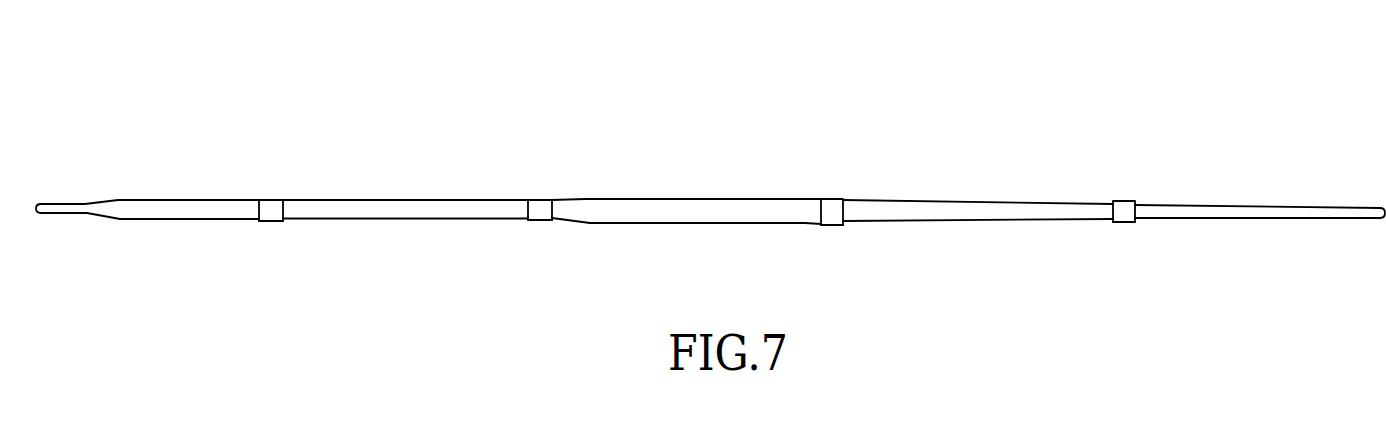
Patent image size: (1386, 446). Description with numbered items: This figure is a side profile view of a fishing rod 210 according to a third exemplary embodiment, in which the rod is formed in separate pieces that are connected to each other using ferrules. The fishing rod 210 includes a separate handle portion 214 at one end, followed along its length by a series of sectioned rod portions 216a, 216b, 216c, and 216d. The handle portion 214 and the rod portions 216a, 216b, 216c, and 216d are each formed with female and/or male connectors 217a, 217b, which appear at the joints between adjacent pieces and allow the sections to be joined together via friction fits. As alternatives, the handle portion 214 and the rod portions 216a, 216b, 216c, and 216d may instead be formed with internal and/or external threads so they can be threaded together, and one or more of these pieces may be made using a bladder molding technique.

The fishing rod 210 is at (886, 116).
The handle portion 214 is at (138, 201).
The rod portion 216a is at (420, 200).
The rod portion 216b is at (705, 199).
The rod portion 216c is at (972, 200).
The rod portion 216d is at (1252, 206).
The female connector 217a is at (273, 206).
The male connector 217b is at (281, 221).